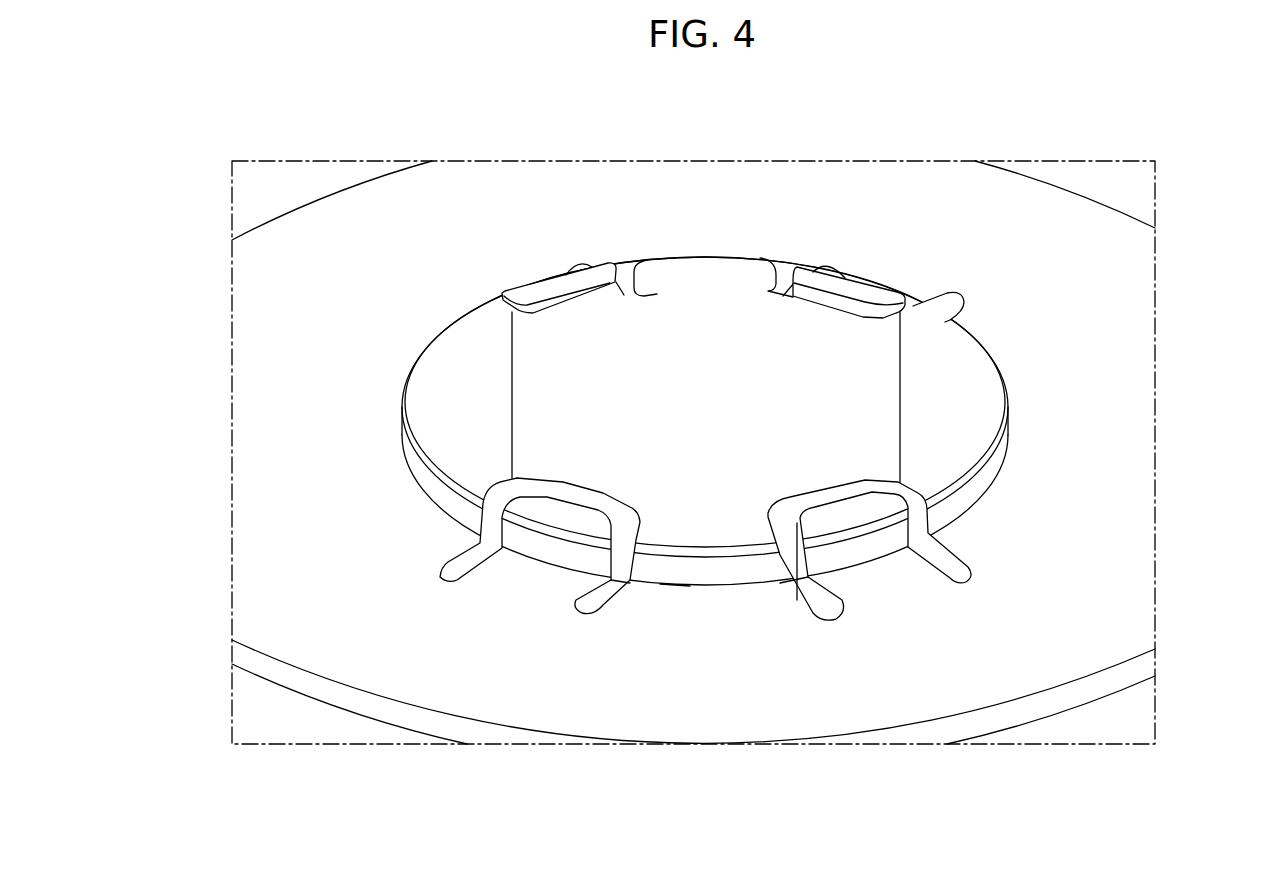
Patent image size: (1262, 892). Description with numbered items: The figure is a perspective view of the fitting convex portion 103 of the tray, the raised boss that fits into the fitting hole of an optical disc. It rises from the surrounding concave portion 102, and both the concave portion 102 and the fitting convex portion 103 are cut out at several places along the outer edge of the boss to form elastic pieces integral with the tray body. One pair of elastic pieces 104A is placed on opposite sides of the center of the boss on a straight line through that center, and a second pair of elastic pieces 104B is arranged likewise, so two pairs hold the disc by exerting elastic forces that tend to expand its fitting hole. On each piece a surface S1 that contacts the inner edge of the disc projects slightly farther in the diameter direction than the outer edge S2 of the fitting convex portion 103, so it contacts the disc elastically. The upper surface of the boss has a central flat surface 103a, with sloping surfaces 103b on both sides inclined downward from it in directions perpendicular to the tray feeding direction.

The concave portion 102 is at (1012, 207).
The fitting convex portion 103 is at (726, 256).
The flat surface 103a is at (687, 295).
The sloping surface 103b is at (977, 403).
The elastic piece 104A is at (852, 290).
The elastic piece 104B is at (567, 280).
The surface S1 is at (573, 553).
The outer edge S2 is at (737, 567).